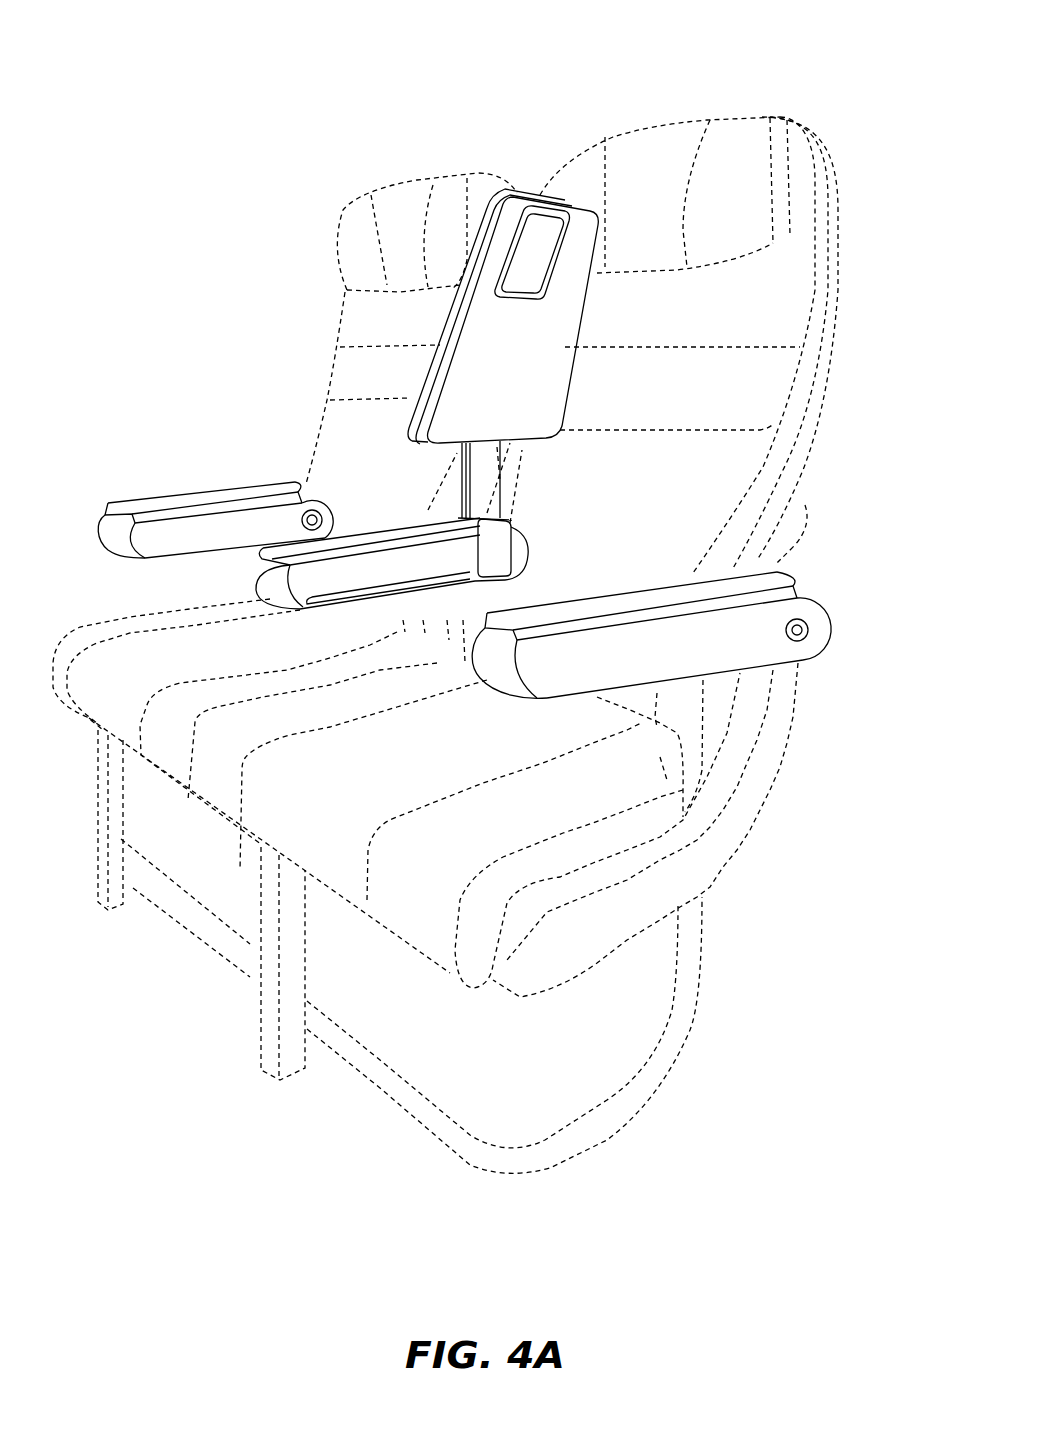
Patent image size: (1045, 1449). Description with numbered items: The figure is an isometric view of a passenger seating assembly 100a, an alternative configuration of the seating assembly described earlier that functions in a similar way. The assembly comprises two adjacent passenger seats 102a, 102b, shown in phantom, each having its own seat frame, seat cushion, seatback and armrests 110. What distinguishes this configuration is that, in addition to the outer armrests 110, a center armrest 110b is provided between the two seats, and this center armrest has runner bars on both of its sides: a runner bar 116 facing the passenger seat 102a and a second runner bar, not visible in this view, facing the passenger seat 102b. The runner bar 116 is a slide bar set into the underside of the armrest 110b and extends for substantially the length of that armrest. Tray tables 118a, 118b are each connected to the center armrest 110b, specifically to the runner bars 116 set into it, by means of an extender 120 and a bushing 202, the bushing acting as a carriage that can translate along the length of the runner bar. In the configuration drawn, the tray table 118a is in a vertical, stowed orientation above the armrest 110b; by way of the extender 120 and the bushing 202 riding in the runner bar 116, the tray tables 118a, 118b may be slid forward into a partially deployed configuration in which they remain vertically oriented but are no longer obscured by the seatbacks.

The passenger seating assembly 100a is at (128, 64).
The passenger seat 102a is at (697, 365).
The passenger seat 102b is at (400, 320).
The armrests 110 is at (168, 542).
The armrest 110b is at (333, 587).
The runner bar 116 is at (364, 592).
The tray table 118a is at (483, 397).
The tray table 118b is at (418, 400).
The extender 120 is at (493, 555).
The bushing 202 is at (470, 583).